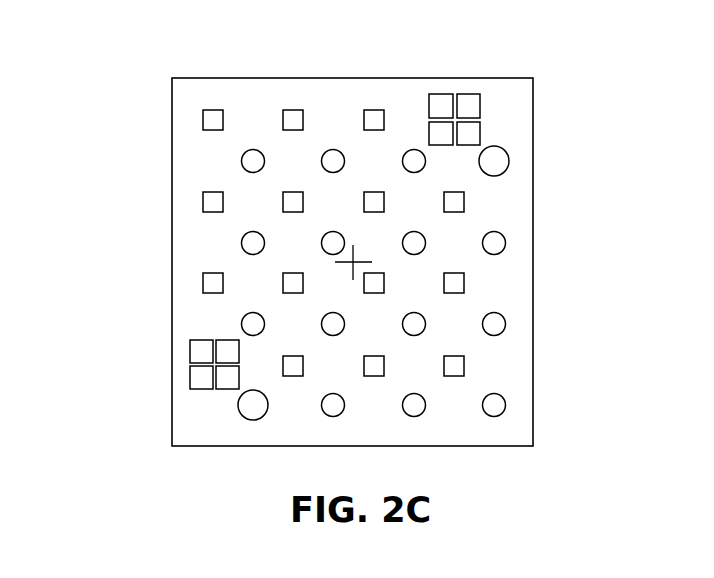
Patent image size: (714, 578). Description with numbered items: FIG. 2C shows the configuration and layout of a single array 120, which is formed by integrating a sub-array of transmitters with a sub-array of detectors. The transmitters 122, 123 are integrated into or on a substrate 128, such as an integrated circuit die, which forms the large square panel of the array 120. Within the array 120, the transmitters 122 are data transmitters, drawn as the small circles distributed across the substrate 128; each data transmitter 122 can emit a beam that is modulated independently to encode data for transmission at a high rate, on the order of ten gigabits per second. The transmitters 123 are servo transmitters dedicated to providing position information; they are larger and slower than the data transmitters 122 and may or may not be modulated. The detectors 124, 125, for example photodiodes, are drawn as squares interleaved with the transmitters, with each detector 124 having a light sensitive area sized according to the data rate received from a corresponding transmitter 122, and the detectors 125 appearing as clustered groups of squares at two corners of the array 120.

The array 120 is at (123, 84).
The data transmitters 122 is at (506, 325).
The servo transmitters 123 is at (253, 405).
The detectors 124 is at (213, 202).
The detectors 125 is at (486, 104).
The substrate 128 is at (515, 272).